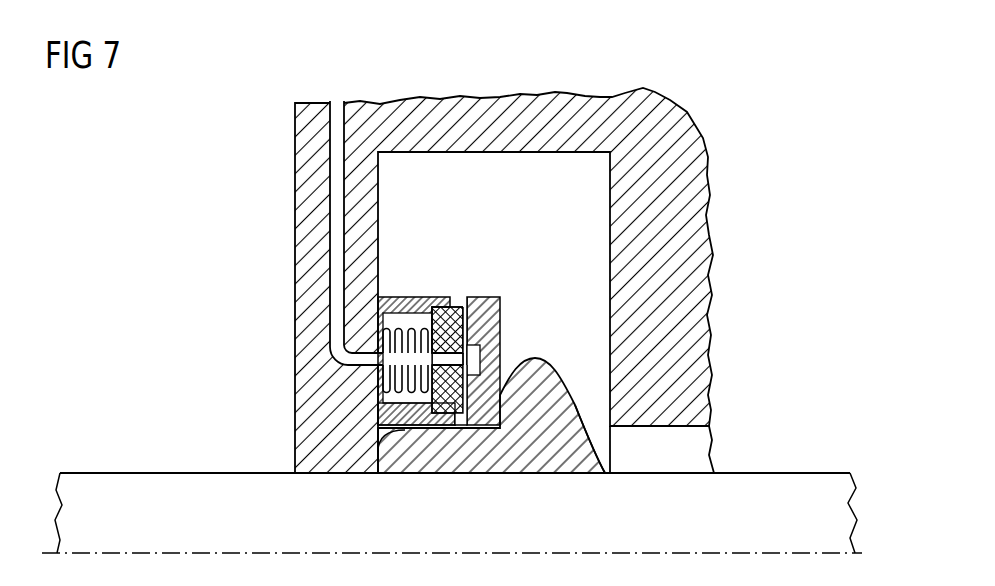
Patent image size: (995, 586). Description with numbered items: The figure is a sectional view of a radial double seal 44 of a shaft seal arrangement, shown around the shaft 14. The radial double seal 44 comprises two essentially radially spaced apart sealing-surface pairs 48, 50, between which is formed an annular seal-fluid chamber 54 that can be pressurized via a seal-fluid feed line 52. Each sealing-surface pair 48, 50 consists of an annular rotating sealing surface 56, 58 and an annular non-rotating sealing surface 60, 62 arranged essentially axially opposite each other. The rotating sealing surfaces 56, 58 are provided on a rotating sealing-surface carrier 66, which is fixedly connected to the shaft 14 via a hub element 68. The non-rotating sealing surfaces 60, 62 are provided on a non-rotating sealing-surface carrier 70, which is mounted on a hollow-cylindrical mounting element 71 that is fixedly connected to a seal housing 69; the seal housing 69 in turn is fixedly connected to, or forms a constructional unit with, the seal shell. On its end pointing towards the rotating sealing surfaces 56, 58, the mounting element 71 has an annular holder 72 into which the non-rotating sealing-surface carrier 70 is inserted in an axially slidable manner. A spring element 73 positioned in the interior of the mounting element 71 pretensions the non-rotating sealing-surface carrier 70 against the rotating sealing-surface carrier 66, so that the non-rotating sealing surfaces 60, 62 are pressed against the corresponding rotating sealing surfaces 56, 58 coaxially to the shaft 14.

The shaft 14 is at (793, 481).
The radial double seal 44 is at (524, 243).
The sealing-surface pair 48 is at (460, 307).
The sealing-surface pair 50 is at (460, 412).
The seal-fluid feed line 52 is at (338, 103).
The seal-fluid chamber 54 is at (500, 342).
The rotating sealing surface 56 is at (470, 328).
The rotating sealing surface 58 is at (472, 393).
The non-rotating sealing surface 60 is at (460, 317).
The non-rotating sealing surface 62 is at (420, 406).
The rotating sealing-surface carrier 66 is at (548, 368).
The hub element 68 is at (568, 472).
The seal housing 69 is at (710, 234).
The non-rotating sealing-surface carrier 70 is at (432, 297).
The mounting element 71 is at (403, 441).
The annular holder 72 is at (437, 433).
The spring element 73 is at (383, 388).